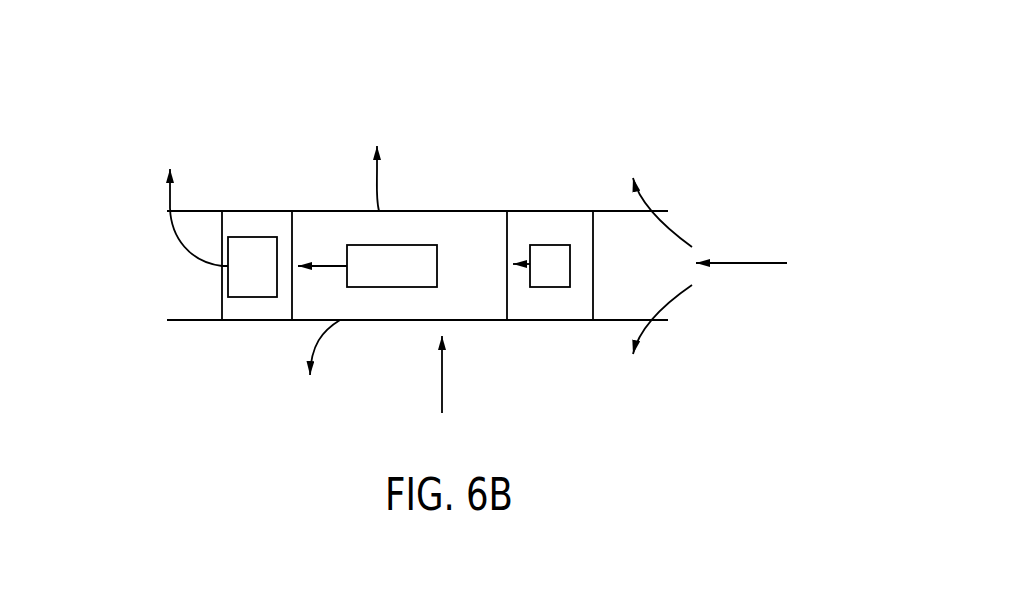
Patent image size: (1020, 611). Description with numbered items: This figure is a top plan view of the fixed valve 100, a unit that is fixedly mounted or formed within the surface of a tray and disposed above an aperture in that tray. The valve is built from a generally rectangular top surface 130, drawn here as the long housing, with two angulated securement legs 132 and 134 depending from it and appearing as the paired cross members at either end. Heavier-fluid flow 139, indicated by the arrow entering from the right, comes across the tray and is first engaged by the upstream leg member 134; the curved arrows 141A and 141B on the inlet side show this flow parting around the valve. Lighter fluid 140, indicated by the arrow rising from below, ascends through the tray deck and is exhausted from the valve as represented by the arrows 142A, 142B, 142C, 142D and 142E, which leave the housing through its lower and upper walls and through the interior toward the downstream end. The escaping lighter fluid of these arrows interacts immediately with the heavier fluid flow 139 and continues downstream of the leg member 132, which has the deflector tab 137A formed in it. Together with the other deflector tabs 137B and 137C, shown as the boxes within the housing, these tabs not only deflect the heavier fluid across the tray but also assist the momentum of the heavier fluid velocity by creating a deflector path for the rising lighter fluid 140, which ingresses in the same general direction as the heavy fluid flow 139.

The fixed valve 100 is at (542, 130).
The top surface 130 is at (445, 211).
The securement leg 132 is at (268, 222).
The upstream leg member 134 is at (557, 228).
The deflector tab 137A is at (240, 236).
The deflector tab 137B is at (437, 250).
The deflector tab 137C is at (570, 266).
The heavier-fluid flow 139 is at (762, 262).
The lighter fluid 140 is at (443, 378).
The first diverted air flow 141A is at (670, 228).
The second diverted air flow 141B is at (670, 303).
The arrow 142A is at (318, 338).
The arrow 142B is at (183, 247).
The arrow 142C is at (377, 194).
The arrow 142D is at (323, 269).
The arrow 142E is at (526, 268).